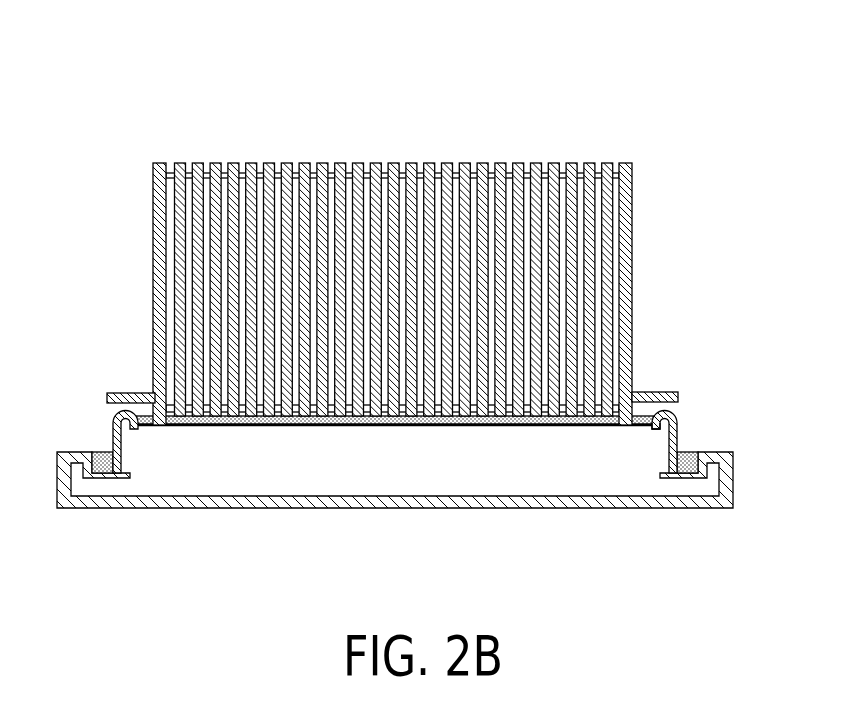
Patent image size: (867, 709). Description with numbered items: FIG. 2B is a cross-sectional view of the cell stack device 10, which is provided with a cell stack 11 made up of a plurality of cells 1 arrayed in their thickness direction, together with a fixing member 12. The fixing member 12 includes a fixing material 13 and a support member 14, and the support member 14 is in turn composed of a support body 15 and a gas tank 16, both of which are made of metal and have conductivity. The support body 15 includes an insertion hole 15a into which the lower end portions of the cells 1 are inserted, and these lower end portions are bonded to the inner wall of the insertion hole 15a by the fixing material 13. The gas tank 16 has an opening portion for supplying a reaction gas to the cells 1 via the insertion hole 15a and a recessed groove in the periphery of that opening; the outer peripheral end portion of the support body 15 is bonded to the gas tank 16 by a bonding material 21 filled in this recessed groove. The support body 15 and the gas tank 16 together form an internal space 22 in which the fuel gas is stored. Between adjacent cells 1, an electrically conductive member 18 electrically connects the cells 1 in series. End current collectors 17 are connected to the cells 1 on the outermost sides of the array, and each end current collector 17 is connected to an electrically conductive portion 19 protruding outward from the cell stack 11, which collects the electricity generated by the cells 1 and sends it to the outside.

The cell 1 is at (477, 163).
The cell stack device 10 is at (695, 103).
The cell stack 11 is at (622, 80).
The fixing member 12 is at (774, 323).
The fixing material 13 is at (636, 426).
The support member 14 is at (800, 418).
The support body 15 is at (114, 420).
The insertion hole 15a is at (645, 439).
The gas tank 16 is at (726, 452).
The end current collector 17 is at (159, 163).
The electrically conductive member 18 is at (352, 176).
The electrically conductive portion 19 is at (111, 393).
The bonding material 21 is at (102, 470).
The internal space 22 is at (402, 489).